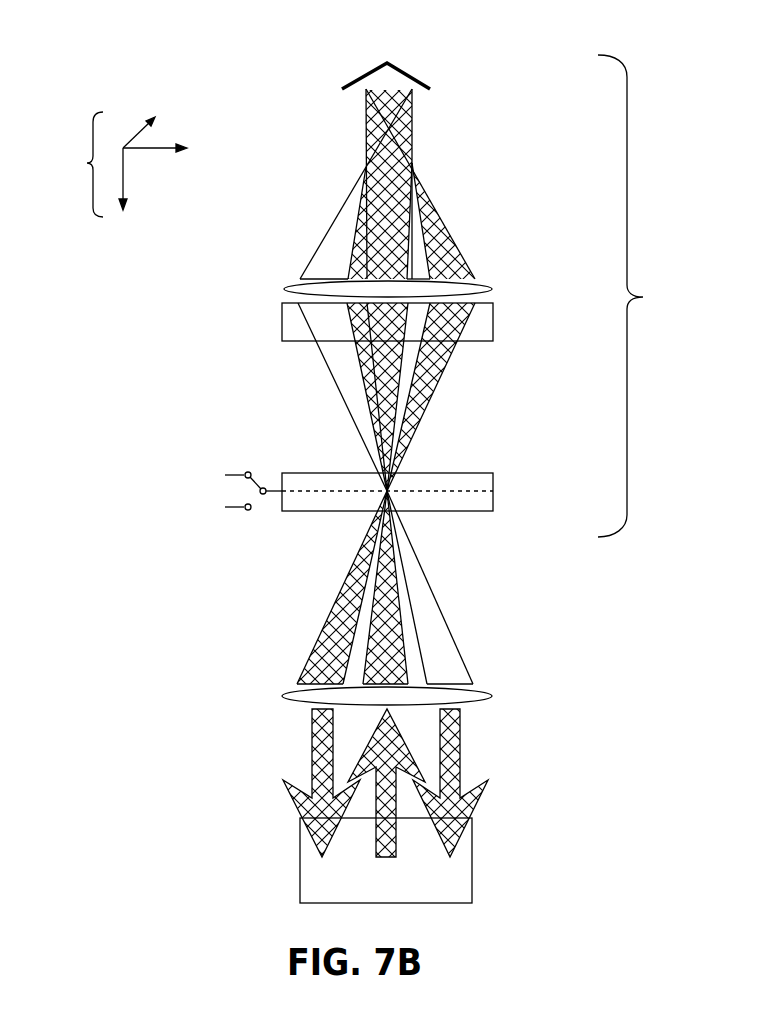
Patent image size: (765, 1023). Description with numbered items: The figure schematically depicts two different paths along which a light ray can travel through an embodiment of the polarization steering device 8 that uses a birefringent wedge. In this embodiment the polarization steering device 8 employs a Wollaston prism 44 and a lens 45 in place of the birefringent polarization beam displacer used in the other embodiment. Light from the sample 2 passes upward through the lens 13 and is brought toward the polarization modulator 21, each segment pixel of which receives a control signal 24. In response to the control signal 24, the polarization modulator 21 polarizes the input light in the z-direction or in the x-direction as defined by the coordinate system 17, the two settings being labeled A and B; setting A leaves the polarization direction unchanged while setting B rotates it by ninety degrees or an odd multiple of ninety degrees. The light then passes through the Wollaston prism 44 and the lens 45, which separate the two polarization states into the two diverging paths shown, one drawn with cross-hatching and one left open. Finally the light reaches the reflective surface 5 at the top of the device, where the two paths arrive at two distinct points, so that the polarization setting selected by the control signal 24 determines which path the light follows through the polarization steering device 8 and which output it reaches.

The sample 2 is at (463, 872).
The reflective surface 5 is at (404, 71).
The polarization steering device 8 is at (631, 296).
The objective lens 13 is at (480, 698).
The coordinate system 17 is at (128, 167).
The polarization modulator 21 is at (483, 483).
The control signal 24 is at (266, 487).
The Wollaston prism 44 is at (485, 323).
The lens 45 is at (490, 289).